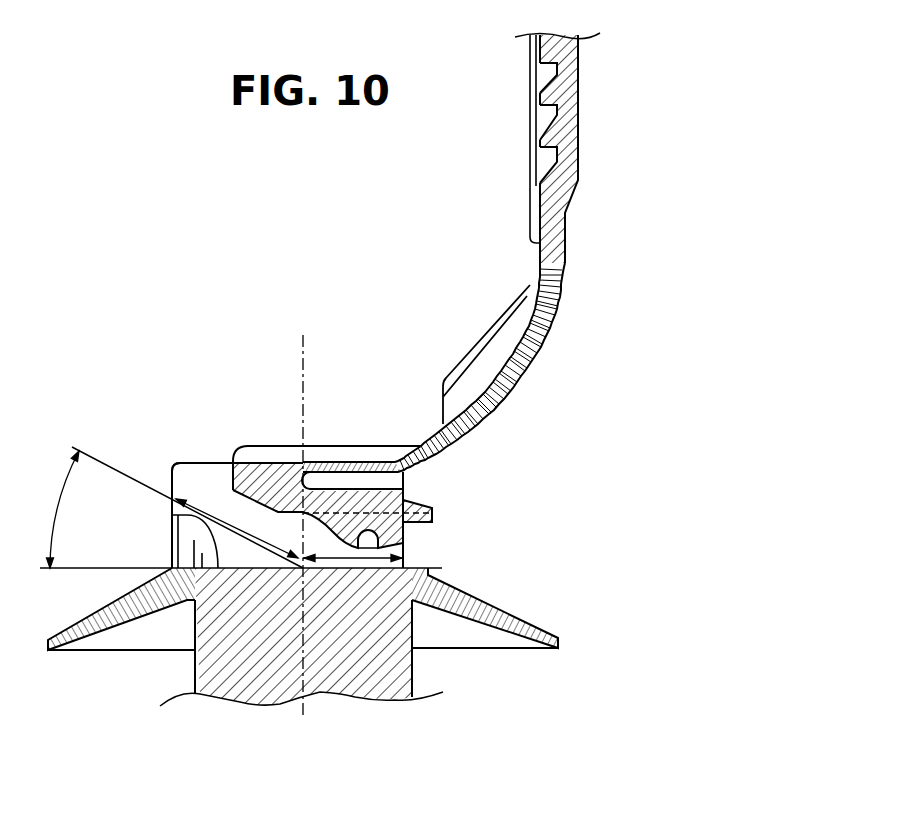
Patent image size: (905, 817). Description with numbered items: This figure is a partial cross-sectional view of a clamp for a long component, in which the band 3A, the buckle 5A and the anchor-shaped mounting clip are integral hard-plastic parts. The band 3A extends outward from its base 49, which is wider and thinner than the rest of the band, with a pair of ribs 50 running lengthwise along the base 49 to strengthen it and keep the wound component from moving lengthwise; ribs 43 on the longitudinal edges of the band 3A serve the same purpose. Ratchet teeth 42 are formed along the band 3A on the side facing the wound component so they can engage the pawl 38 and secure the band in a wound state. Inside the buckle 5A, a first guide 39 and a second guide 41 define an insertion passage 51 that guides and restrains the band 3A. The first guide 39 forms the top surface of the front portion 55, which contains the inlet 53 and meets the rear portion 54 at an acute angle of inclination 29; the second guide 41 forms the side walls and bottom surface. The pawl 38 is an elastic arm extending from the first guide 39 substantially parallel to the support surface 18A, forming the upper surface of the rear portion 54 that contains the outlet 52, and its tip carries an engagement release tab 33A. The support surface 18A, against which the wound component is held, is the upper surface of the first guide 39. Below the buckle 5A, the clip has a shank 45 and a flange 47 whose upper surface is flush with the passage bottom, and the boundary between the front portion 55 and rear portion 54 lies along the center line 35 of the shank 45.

The band 3A is at (601, 150).
The ratchet teeth 42 is at (547, 110).
The ribs 43 is at (530, 148).
The base 49 is at (541, 350).
The ribs 50 is at (503, 340).
The buckle 5A is at (380, 439).
The support surface 18A is at (356, 446).
The first guide 39 is at (262, 473).
The pawl 38 is at (404, 533).
The engagement release tab 33A is at (433, 513).
The center line 35 is at (296, 352).
The inlet 53 is at (172, 485).
The insertion passage 51 is at (192, 480).
The front portion 55 is at (220, 513).
The second guide 41 is at (178, 543).
The angle of inclination 29 is at (230, 507).
The outlet 52 is at (406, 557).
The rear portion 54 is at (332, 560).
The shank 45 is at (245, 663).
The flange 47 is at (524, 622).